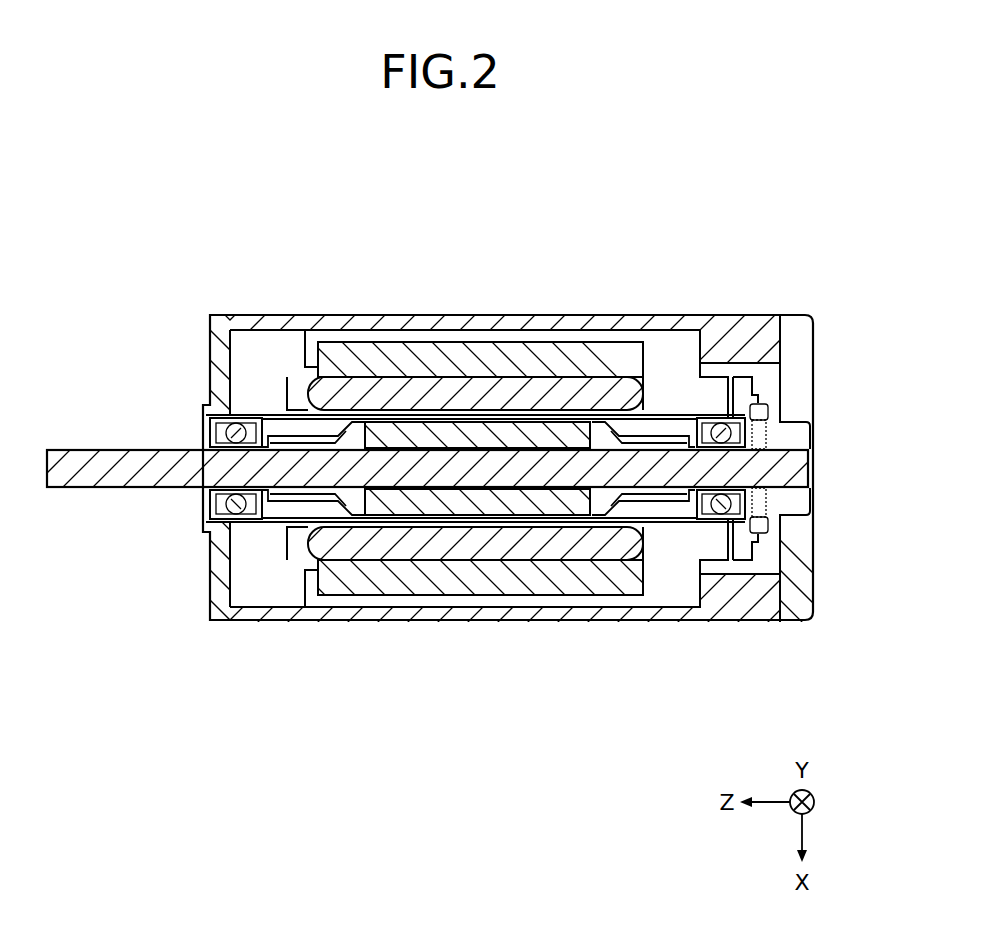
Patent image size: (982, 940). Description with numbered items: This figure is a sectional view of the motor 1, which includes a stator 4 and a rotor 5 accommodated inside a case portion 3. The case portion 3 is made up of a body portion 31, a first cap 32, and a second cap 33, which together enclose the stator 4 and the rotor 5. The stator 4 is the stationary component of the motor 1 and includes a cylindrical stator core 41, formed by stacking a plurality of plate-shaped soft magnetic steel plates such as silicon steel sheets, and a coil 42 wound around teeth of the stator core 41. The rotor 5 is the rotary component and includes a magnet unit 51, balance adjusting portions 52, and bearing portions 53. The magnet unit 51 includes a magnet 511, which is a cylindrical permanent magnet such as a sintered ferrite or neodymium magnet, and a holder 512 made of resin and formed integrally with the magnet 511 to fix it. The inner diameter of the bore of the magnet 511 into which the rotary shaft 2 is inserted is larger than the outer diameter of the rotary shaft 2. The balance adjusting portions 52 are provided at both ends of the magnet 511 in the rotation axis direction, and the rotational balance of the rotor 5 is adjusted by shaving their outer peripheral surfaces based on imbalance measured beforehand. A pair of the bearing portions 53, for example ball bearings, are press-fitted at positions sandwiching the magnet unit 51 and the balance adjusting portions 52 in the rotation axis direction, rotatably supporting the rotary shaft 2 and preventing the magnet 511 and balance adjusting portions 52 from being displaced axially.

The motor 1 is at (783, 240).
The rotary shaft 2 is at (120, 449).
The case portion 3 is at (823, 695).
The body portion 31 is at (455, 612).
The first cap 32 is at (218, 605).
The second cap 33 is at (802, 603).
The stator 4 is at (657, 195).
The stator core 41 is at (621, 362).
The coil 42 is at (564, 400).
The rotor 5 is at (218, 195).
The magnet unit 51 is at (535, 253).
The magnet 511 is at (497, 446).
The holder 512 is at (428, 446).
The balance adjusting portions 52 is at (341, 415).
The bearing portions 53 is at (237, 415).